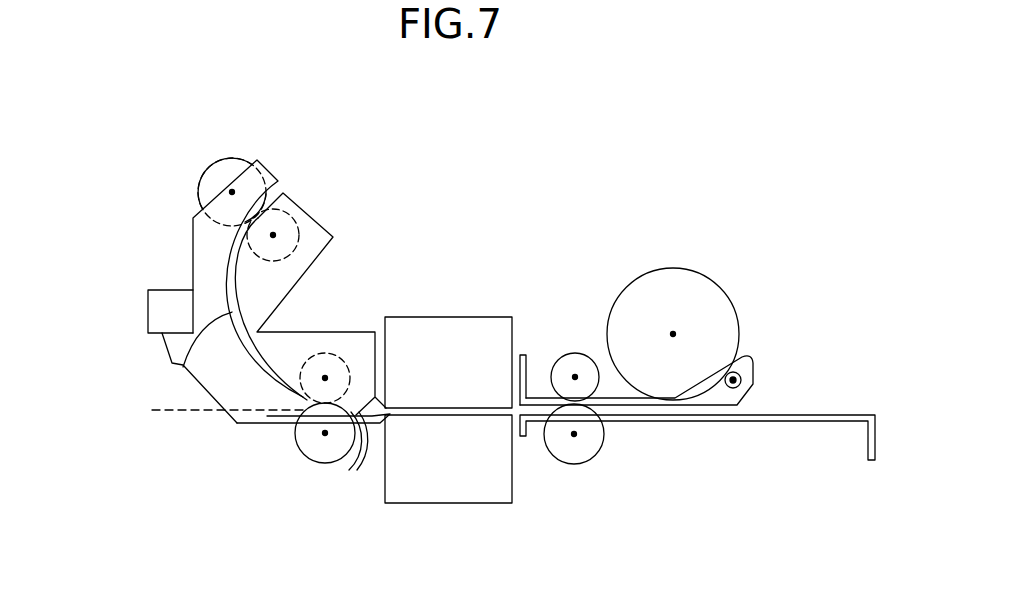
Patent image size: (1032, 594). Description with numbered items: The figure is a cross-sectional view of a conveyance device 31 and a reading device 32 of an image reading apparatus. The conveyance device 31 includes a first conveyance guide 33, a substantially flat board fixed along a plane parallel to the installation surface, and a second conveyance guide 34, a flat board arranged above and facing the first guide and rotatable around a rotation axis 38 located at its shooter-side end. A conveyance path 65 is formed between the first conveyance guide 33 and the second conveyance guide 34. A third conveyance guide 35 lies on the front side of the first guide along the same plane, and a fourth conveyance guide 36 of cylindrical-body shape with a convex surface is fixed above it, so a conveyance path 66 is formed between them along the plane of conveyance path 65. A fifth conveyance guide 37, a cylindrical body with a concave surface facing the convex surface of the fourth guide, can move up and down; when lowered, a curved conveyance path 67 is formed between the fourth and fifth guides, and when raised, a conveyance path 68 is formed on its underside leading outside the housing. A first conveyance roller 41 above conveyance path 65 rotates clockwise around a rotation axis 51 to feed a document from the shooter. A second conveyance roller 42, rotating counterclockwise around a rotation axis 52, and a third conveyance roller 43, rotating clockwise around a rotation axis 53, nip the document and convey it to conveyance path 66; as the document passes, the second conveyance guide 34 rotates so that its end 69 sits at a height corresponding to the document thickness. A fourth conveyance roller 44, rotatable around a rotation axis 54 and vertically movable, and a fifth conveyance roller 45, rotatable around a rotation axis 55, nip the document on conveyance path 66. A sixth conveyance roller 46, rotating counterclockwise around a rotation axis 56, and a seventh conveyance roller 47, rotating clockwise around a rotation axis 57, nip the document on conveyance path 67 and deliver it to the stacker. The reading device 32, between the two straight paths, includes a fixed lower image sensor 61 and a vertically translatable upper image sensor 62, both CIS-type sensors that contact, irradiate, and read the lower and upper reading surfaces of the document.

The conveyance device 31 is at (114, 266).
The reading device 32 is at (500, 532).
The first conveyance guide 33 is at (628, 422).
The second conveyance guide 34 is at (612, 398).
The third conveyance guide 35 is at (367, 442).
The fourth conveyance guide 36 is at (340, 353).
The fifth conveyance guide 37 is at (193, 228).
The rotation axis 38 is at (742, 380).
The first conveyance roller 41 is at (713, 276).
The second conveyance roller 42 is at (573, 464).
The third conveyance roller 43 is at (575, 353).
The fourth conveyance roller 44 is at (317, 463).
The fifth conveyance roller 45 is at (347, 352).
The sixth conveyance roller 46 is at (238, 157).
The seventh conveyance roller 47 is at (290, 196).
The rotation axis 51 is at (673, 334).
The rotation axis 52 is at (574, 434).
The rotation axis 53 is at (574, 377).
The rotation axis 54 is at (323, 434).
The rotation axis 55 is at (324, 377).
The rotation axis 56 is at (198, 190).
The rotation axis 57 is at (298, 210).
The lower image sensor 61 is at (447, 504).
The upper image sensor 62 is at (448, 316).
The conveyance path 65 is at (622, 412).
The conveyance path 66 is at (358, 445).
The conveyance path 67 is at (183, 367).
The conveyance path 68 is at (193, 412).
The end 69 is at (537, 396).